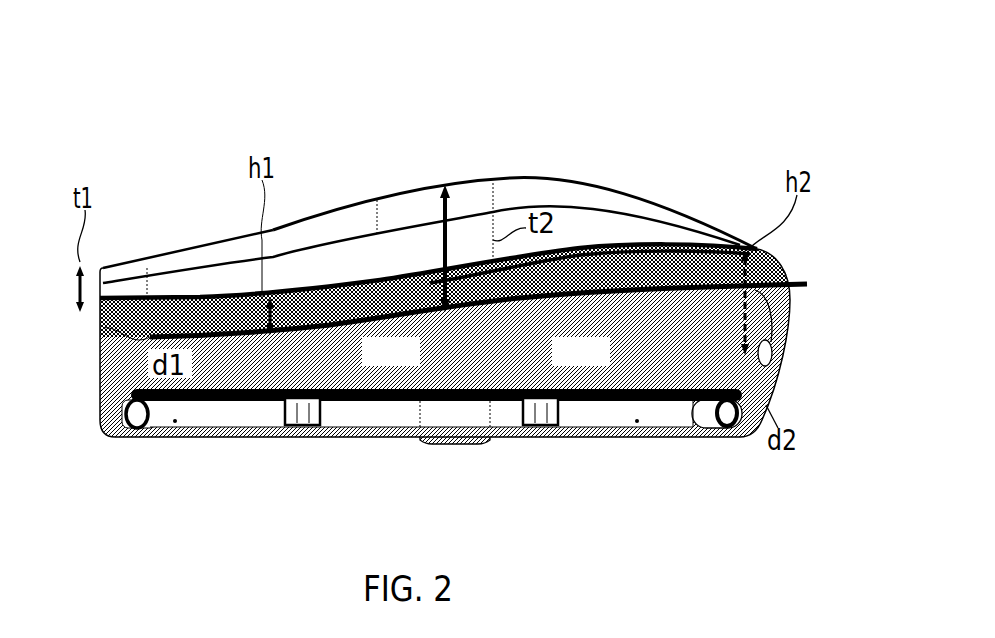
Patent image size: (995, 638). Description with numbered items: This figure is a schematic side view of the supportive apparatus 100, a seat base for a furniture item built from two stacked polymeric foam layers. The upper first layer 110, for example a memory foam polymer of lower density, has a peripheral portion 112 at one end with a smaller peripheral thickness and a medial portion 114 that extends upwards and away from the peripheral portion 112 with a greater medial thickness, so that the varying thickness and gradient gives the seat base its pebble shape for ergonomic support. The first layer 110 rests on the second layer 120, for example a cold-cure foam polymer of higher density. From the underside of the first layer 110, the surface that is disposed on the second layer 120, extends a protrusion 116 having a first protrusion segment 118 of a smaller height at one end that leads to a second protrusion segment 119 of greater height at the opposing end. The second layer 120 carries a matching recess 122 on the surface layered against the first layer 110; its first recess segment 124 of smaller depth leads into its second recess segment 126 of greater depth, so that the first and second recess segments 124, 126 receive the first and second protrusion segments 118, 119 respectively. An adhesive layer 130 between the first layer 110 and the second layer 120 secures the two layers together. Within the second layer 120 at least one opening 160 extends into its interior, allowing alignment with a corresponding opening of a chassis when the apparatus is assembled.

The supportive apparatus 100 is at (792, 38).
The first layer 110 is at (163, 317).
The peripheral portion 112 is at (107, 270).
The medial portion 114 is at (447, 186).
The protrusion 116 is at (657, 267).
The first protrusion segment 118 is at (343, 298).
The second protrusion segment 119 is at (777, 258).
The second layer 120 is at (118, 417).
The recess 122 is at (497, 307).
The first recess segment 124 is at (290, 313).
The second recess segment 126 is at (770, 360).
The adhesive layer 130 is at (501, 306).
The opening 160 is at (100, 348).